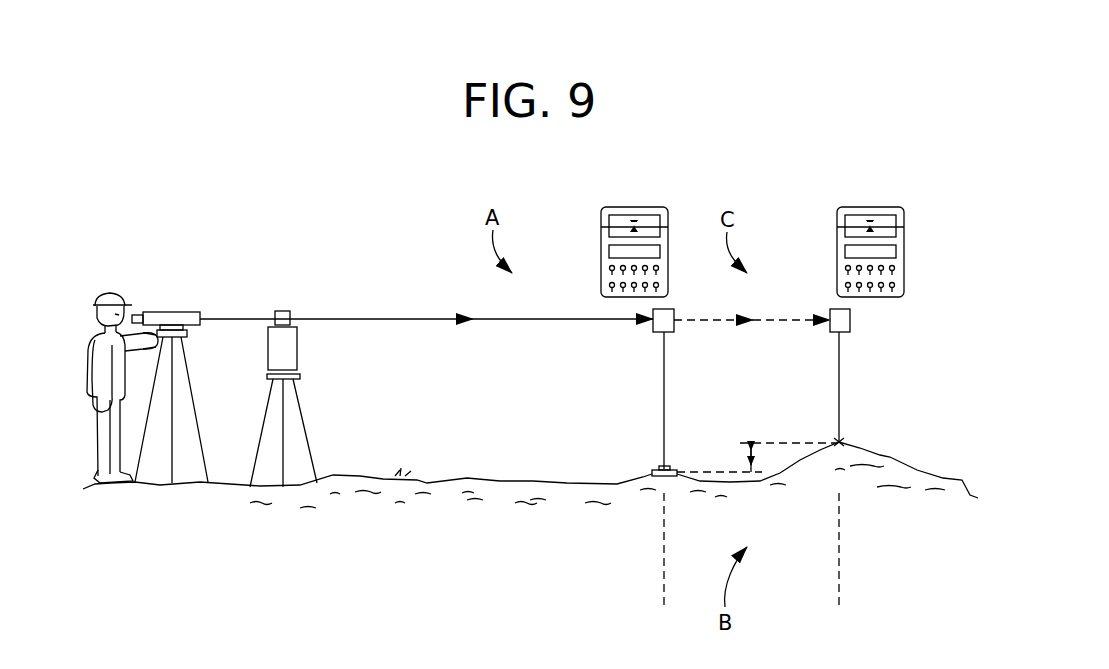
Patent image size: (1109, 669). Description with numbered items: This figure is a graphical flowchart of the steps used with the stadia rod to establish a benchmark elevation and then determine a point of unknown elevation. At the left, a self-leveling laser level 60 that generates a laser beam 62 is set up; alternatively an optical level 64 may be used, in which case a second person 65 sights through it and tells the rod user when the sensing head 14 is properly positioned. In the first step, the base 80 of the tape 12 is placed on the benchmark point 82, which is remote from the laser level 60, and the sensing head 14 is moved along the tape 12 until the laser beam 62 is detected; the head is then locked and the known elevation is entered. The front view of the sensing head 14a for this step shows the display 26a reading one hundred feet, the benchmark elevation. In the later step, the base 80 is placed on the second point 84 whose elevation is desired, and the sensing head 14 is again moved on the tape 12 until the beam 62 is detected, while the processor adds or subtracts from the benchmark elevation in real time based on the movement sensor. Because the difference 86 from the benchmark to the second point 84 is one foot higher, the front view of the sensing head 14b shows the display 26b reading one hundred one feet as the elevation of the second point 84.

The tape 12 is at (662, 388).
The sensing head 14 is at (660, 338).
The front view of the sensing head in step A 14a is at (601, 229).
The front view of the sensing head in step C 14b is at (838, 229).
The display 26a is at (609, 250).
The display 26b is at (845, 250).
The self-leveling laser level 60 is at (290, 348).
The laser beam 62 is at (390, 318).
The optical level 64 is at (172, 311).
The second person 65 is at (103, 292).
The base of the tape 80 is at (655, 470).
The benchmark point 82 is at (657, 478).
The second point 84 is at (838, 448).
The difference 86 is at (735, 457).